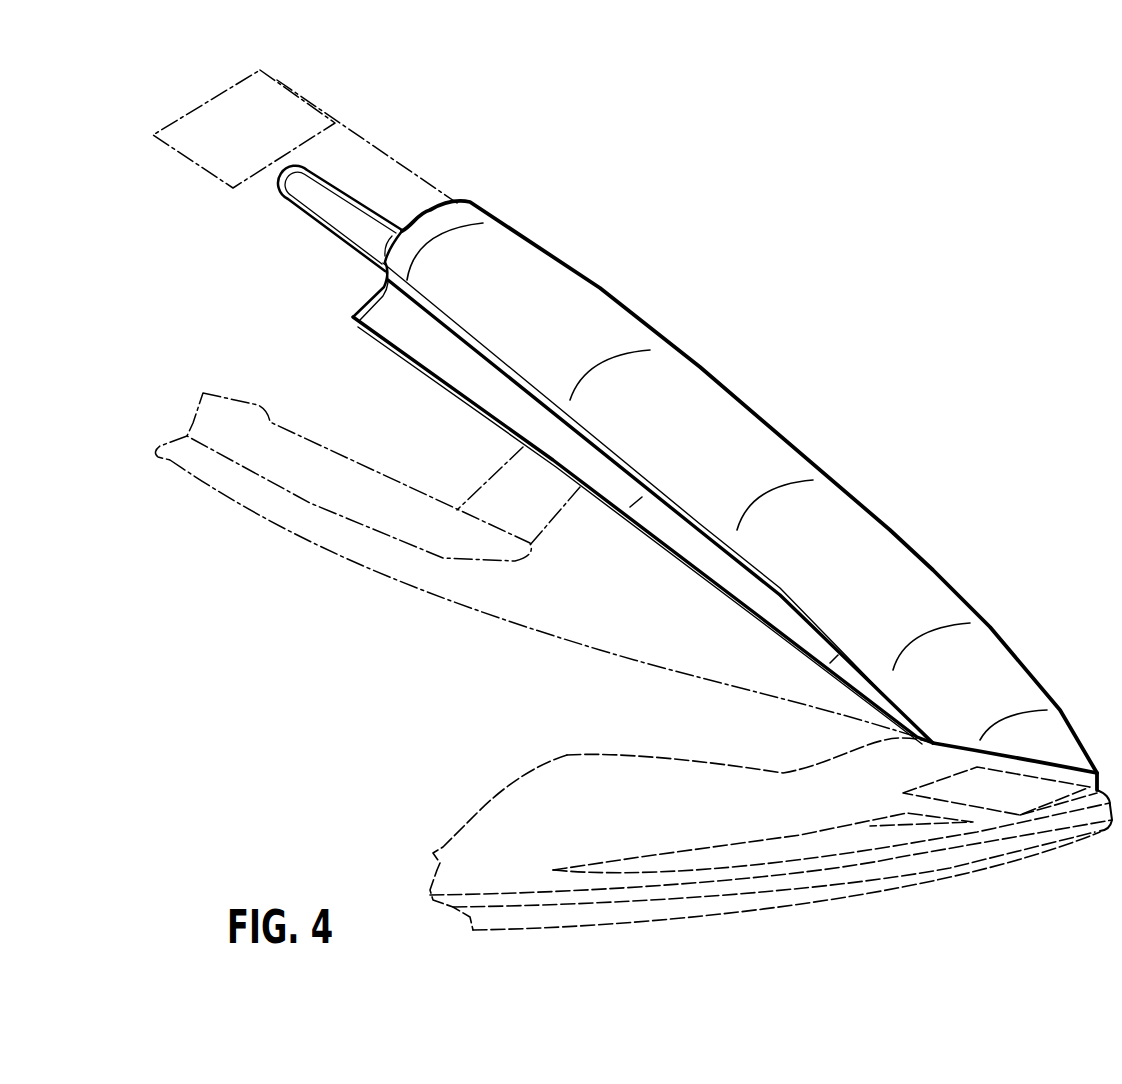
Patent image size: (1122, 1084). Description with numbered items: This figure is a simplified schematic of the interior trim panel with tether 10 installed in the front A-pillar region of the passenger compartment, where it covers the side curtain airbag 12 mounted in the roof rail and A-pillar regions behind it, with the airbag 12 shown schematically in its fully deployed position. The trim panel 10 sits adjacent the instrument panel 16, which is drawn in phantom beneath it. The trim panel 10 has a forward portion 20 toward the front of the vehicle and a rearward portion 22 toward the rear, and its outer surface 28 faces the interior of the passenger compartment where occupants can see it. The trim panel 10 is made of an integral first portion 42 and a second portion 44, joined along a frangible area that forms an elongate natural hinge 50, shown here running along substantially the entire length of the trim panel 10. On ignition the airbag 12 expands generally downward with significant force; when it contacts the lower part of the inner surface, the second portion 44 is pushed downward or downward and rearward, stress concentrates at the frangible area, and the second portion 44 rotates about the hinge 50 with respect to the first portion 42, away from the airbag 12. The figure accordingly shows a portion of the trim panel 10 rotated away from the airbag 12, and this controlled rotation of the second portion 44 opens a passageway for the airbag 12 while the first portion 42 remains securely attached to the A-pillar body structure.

The interior trim panel with tether 10 is at (860, 385).
The side curtain airbag 12 is at (310, 203).
The instrument panel 16 is at (847, 805).
The forward portion 20 is at (935, 572).
The rearward portion 22 is at (418, 366).
The outer surface 28 is at (842, 513).
The first portion 42 is at (700, 408).
The second portion 44 is at (508, 416).
The hinge 50 is at (500, 364).